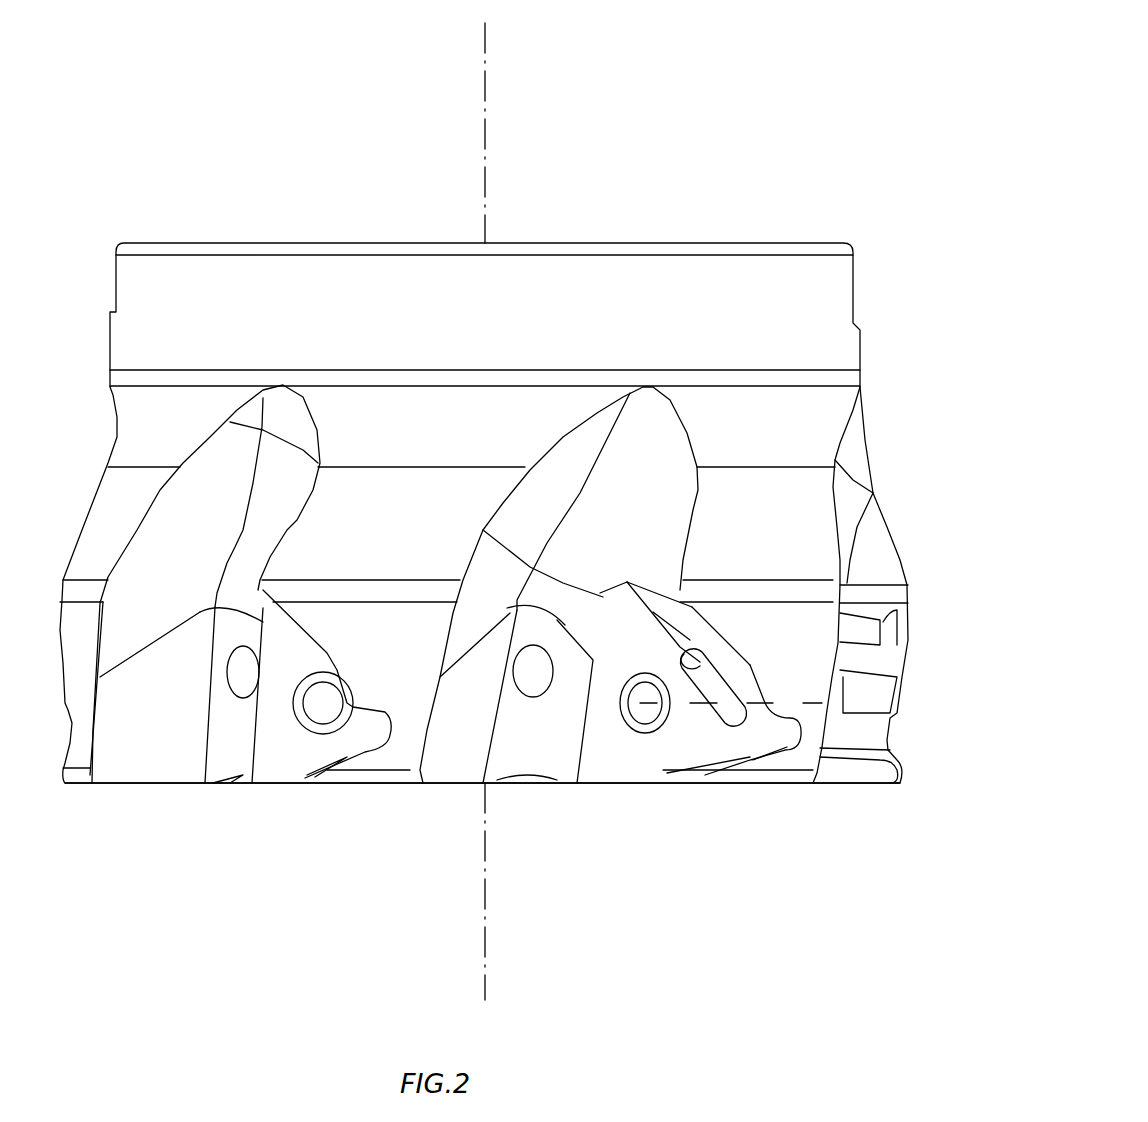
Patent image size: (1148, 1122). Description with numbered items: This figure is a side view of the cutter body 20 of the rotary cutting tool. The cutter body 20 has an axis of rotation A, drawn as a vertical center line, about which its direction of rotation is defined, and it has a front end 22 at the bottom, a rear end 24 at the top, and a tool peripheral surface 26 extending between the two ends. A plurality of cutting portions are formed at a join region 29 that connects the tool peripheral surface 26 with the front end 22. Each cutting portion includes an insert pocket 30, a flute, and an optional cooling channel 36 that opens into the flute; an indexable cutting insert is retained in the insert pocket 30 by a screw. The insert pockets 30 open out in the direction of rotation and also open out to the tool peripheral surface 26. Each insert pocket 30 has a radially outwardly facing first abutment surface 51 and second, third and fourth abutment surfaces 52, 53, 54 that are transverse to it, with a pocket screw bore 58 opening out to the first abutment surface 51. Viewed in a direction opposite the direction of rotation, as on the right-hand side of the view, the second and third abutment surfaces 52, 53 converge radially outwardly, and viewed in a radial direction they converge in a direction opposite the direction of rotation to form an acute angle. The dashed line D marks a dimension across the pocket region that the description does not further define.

The cutter body 20 is at (695, 75).
The front end 22 is at (392, 904).
The rear end 24 is at (540, 200).
The tool peripheral surface 26 is at (853, 440).
The join region 29 is at (914, 803).
The insert pocket 30 is at (290, 760).
The cooling channel 36 is at (240, 672).
The first abutment surface 51 is at (610, 753).
The second abutment surface 52 is at (688, 635).
The third abutment surface 53 is at (700, 660).
The fourth abutment surface 54 is at (872, 695).
The pocket screw bore 58 is at (645, 715).
The axis of rotation A is at (485, 163).
The diameter line D is at (793, 700).